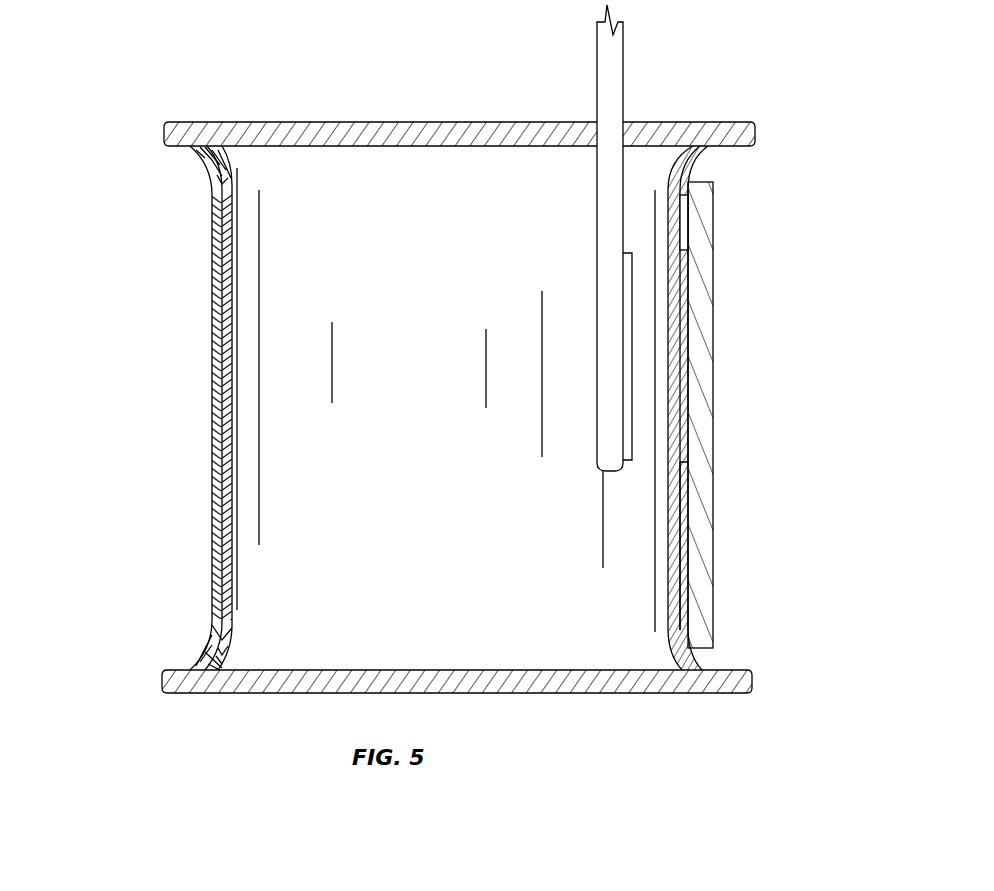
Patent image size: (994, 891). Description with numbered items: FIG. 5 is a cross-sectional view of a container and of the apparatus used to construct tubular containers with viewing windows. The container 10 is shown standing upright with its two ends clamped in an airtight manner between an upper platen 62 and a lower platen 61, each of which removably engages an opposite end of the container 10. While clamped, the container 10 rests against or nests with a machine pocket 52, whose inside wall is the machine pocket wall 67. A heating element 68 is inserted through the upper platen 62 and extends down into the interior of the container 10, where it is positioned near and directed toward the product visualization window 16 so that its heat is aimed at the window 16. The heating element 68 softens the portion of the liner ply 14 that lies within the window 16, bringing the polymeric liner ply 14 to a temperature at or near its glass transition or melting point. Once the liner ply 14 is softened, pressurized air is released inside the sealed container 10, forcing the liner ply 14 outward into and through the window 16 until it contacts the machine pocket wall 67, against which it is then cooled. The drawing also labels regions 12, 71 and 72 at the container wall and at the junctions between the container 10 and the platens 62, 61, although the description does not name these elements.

The container 10 is at (112, 403).
The anode 12 is at (683, 483).
The liner ply 14 is at (673, 228).
The product visualization window 16 is at (681, 292).
The machine pocket 52 is at (700, 300).
The lower platen 61 is at (640, 693).
The upper platen 62 is at (754, 123).
The machine pocket wall 67 is at (690, 350).
The heating element 68 is at (617, 68).
The upper seal joint 71 is at (182, 162).
The lower seal joint 72 is at (180, 652).